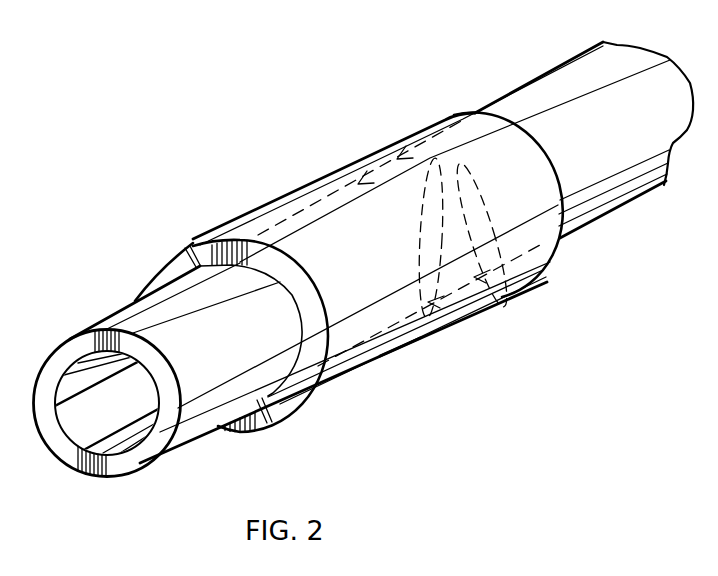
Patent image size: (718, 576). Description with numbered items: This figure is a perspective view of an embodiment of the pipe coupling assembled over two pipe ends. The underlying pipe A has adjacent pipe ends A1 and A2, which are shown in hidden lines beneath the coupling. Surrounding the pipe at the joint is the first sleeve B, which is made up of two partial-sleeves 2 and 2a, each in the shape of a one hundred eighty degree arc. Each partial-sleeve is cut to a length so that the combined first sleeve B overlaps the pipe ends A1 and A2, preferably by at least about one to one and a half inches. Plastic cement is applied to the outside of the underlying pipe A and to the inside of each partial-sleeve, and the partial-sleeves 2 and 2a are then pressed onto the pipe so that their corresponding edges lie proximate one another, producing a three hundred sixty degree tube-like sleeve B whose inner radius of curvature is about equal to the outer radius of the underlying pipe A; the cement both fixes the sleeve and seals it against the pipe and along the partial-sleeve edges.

The partial-sleeve 2 is at (255, 422).
The partial-sleeve 2a is at (207, 250).
The underlying pipe A is at (135, 301).
The pipe end A1 is at (440, 327).
The pipe end A2 is at (503, 300).
The first sleeve B is at (394, 349).